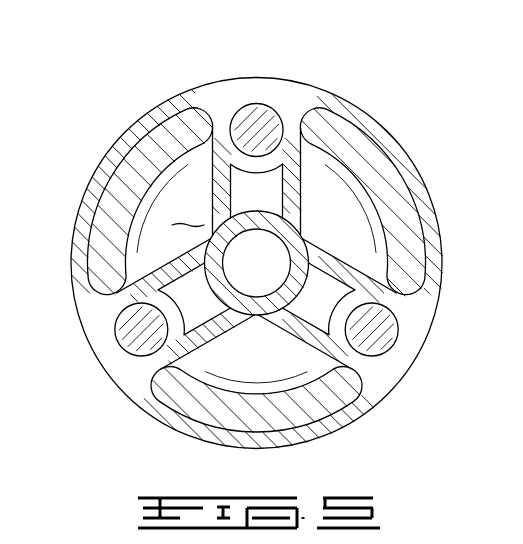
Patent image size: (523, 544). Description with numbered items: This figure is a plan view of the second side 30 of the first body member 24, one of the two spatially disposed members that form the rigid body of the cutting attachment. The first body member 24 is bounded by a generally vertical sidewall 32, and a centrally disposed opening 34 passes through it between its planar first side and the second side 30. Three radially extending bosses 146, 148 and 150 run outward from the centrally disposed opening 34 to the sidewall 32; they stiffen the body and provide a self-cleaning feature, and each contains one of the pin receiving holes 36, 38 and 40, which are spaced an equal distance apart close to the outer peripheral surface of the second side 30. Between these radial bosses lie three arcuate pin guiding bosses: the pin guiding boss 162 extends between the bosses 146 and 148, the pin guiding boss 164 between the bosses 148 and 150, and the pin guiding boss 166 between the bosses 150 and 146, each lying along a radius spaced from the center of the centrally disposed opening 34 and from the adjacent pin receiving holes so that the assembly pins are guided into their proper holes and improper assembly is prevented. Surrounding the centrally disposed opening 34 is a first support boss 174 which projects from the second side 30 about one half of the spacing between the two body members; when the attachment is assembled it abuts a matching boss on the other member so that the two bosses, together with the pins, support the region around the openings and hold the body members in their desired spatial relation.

The first body member 24 is at (326, 52).
The second side 30 is at (188, 214).
The sidewall 32 is at (430, 194).
The centrally disposed opening 34 is at (277, 257).
The pin receiving hole 36 is at (142, 340).
The pin receiving hole 38 is at (257, 128).
The pin receiving hole 40 is at (382, 340).
The radially extending boss 146 is at (150, 279).
The radially extending boss 148 is at (278, 150).
The radially extending boss 150 is at (372, 304).
The pin guiding boss 162 is at (170, 157).
The pin guiding boss 164 is at (368, 126).
The pin guiding boss 166 is at (296, 422).
The first support boss 174 is at (213, 243).